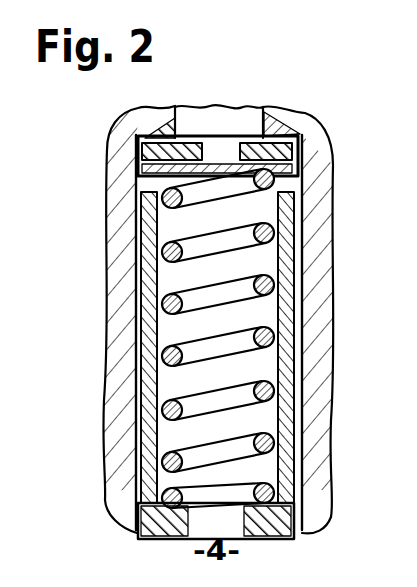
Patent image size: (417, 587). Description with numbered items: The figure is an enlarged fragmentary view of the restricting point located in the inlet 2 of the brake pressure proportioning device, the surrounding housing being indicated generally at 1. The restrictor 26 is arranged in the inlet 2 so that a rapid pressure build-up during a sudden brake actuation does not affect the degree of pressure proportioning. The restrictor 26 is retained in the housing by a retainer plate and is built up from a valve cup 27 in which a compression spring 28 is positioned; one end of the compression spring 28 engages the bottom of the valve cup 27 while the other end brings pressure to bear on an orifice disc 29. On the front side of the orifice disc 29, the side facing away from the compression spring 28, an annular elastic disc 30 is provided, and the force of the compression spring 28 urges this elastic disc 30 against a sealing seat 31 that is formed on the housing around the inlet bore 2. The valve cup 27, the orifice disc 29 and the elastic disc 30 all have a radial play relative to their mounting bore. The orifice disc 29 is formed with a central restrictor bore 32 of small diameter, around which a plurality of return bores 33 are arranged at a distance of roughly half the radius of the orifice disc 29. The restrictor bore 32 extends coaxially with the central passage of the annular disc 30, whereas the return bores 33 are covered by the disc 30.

The housing 1 is at (113, 163).
The inlet 2 is at (218, 125).
The restrictor 26 is at (339, 406).
The valve cup 27 is at (336, 302).
The compression spring 28 is at (312, 250).
The orifice disc 29 is at (292, 170).
The annular elastic disc 30 is at (310, 148).
The sealing seat 31 is at (296, 112).
The restrictor bore 32 is at (137, 238).
The return bores 33 is at (158, 190).